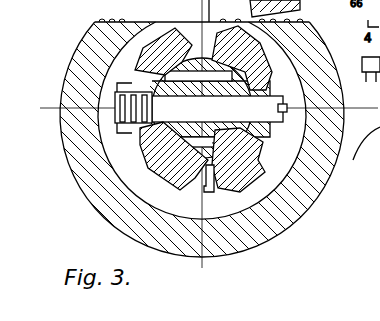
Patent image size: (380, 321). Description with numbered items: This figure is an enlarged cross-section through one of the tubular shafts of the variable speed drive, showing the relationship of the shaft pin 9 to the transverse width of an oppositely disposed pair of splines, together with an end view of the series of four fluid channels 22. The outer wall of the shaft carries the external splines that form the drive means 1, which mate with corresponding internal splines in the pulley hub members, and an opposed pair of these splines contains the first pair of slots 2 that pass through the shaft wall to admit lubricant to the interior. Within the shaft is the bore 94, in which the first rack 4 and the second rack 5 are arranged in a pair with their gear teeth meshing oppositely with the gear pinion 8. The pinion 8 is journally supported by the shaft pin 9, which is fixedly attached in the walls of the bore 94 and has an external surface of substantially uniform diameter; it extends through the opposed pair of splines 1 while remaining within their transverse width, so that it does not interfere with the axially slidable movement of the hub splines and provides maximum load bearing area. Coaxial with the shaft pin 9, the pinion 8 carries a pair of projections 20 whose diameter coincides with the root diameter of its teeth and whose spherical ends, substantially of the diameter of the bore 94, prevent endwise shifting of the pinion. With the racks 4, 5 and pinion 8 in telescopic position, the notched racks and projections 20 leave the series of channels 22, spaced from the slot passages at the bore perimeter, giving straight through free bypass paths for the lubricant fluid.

The drive means 1 is at (296, 207).
The projections 20 is at (150, 72).
The channels 22 is at (256, 61).
The bore 94 is at (148, 68).
The gear pinion 8 is at (262, 149).
The first rack 4 is at (209, 182).
The shaft pin 9 is at (288, 101).
The second rack 5 is at (209, 11).
The first pair of slots 2 is at (252, 10).